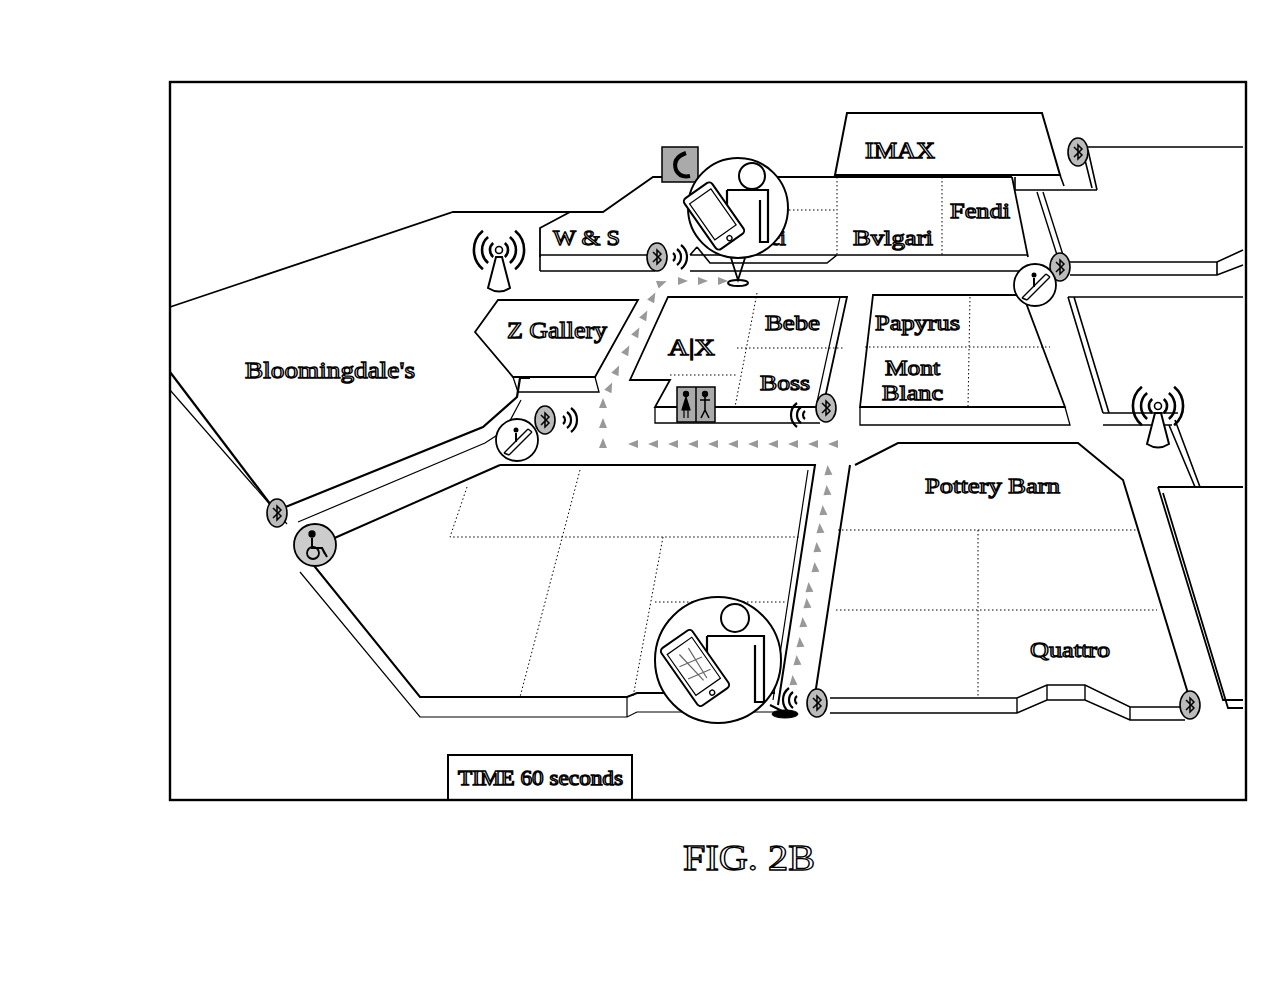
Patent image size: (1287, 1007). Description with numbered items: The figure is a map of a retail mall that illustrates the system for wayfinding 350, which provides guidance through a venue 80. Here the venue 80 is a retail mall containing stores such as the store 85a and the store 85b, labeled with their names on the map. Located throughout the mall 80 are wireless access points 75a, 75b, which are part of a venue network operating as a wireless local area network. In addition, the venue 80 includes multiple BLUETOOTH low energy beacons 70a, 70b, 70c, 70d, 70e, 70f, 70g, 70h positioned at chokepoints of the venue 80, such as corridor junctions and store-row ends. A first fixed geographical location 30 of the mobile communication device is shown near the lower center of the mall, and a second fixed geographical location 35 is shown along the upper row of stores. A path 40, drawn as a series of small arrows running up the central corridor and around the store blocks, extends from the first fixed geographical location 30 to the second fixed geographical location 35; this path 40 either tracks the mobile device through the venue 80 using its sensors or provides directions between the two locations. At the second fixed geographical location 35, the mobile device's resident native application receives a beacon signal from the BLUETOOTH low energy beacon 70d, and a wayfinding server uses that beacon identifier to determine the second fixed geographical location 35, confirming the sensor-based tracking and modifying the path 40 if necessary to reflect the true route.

The system for wayfinding 350 is at (1196, 72).
The first fixed geographical location 30 is at (786, 724).
The second fixed geographical location 35 is at (736, 292).
The path 40 is at (843, 464).
The BLUETOOTH low energy beacon 70a is at (818, 720).
The BLUETOOTH low energy beacon 70b is at (830, 423).
The BLUETOOTH low energy beacon 70c is at (548, 436).
The BLUETOOTH low energy beacon 70d is at (652, 273).
The BLUETOOTH low energy beacon 70e is at (1079, 138).
The BLUETOOTH low energy beacon 70f is at (1072, 272).
The BLUETOOTH low energy beacon 70g is at (1191, 720).
The BLUETOOTH low energy beacon 70h is at (276, 528).
The wireless access point 75a is at (1146, 440).
The wireless access point 75b is at (500, 245).
The venue 80 is at (364, 716).
The store 85a is at (920, 706).
The store 85b is at (975, 552).